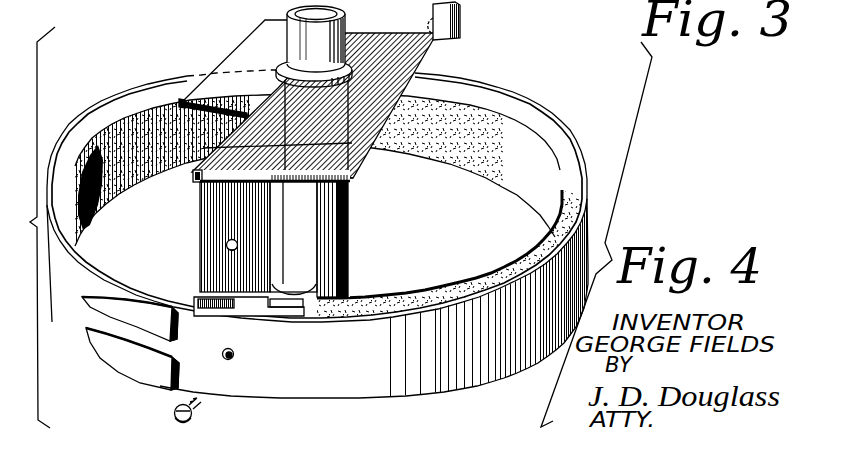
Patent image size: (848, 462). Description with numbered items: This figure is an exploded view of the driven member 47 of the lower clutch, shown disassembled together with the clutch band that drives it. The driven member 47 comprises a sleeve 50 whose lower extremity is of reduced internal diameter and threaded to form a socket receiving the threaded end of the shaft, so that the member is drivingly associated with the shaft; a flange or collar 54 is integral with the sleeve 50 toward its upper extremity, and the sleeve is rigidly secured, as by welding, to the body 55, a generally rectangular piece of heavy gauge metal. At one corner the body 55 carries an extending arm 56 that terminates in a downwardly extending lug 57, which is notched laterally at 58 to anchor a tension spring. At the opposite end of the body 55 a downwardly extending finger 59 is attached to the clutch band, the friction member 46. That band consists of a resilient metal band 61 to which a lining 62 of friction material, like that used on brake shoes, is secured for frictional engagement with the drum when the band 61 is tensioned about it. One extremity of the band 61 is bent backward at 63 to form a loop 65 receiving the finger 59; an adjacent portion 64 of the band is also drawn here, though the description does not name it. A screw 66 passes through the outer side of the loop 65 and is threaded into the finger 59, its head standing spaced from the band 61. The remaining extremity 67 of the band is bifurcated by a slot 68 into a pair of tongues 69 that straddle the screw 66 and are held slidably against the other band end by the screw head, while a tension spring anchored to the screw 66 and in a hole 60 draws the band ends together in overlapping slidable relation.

The friction member 46 is at (552, 112).
The driven member 47 is at (360, 186).
The sleeve 50 is at (350, 228).
The flange or collar 54 is at (224, 82).
The body 55 is at (220, 82).
The extending arm 56 is at (408, 24).
The lug 57 is at (464, 22).
The notch 58 is at (440, 40).
The finger 59 is at (207, 228).
The hole 60 is at (54, 258).
The resilient metal band 61 is at (538, 108).
The lining 62 is at (562, 162).
The bent-back portion 63 is at (230, 298).
The tab 64 is at (296, 306).
The loop 65 is at (201, 303).
The screw 66 is at (171, 411).
The remaining extremity 67 is at (70, 306).
The slot 68 is at (110, 316).
The tongues 69 is at (140, 372).